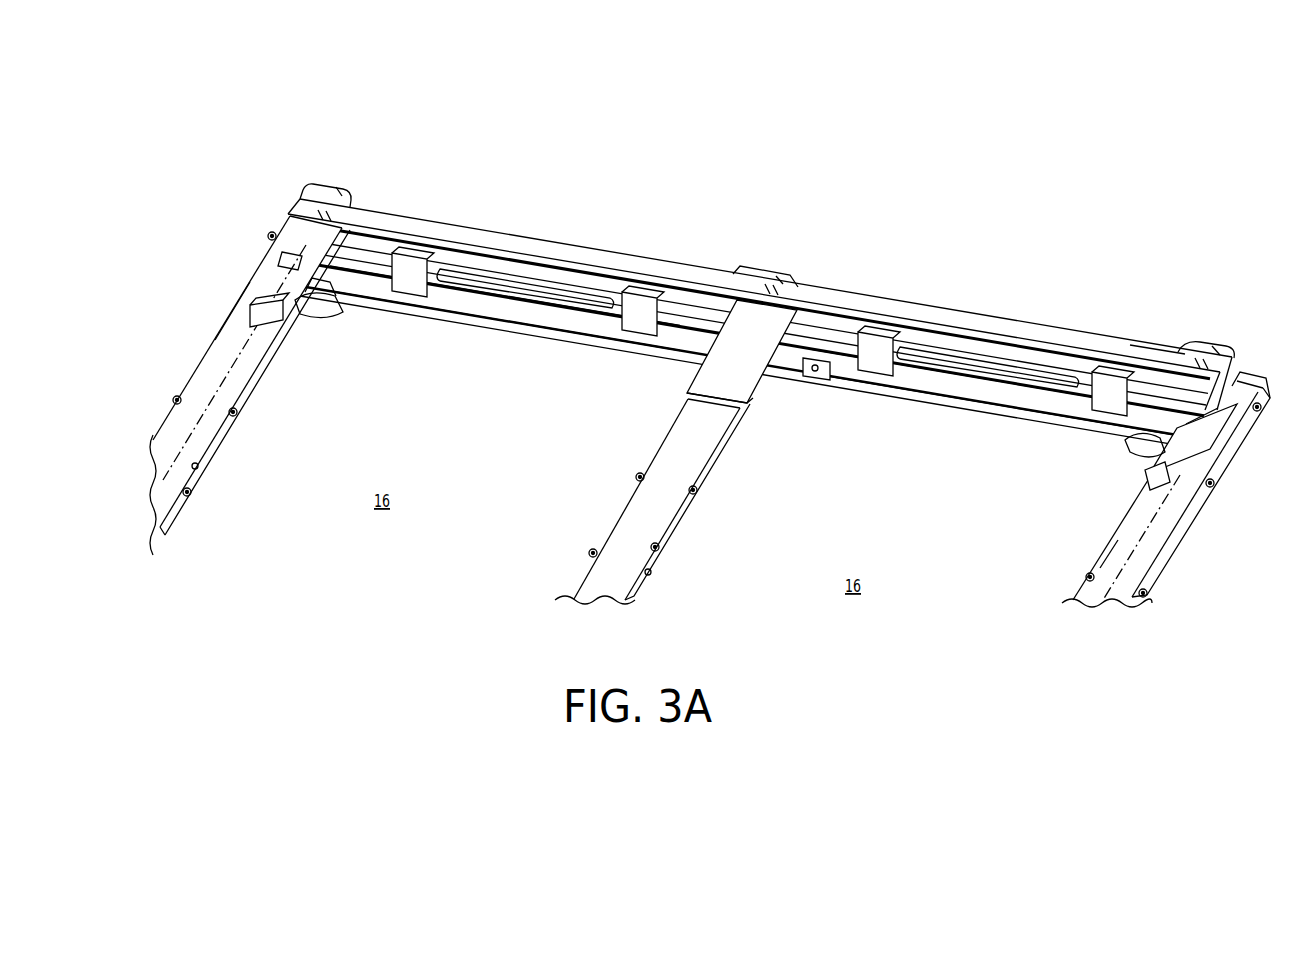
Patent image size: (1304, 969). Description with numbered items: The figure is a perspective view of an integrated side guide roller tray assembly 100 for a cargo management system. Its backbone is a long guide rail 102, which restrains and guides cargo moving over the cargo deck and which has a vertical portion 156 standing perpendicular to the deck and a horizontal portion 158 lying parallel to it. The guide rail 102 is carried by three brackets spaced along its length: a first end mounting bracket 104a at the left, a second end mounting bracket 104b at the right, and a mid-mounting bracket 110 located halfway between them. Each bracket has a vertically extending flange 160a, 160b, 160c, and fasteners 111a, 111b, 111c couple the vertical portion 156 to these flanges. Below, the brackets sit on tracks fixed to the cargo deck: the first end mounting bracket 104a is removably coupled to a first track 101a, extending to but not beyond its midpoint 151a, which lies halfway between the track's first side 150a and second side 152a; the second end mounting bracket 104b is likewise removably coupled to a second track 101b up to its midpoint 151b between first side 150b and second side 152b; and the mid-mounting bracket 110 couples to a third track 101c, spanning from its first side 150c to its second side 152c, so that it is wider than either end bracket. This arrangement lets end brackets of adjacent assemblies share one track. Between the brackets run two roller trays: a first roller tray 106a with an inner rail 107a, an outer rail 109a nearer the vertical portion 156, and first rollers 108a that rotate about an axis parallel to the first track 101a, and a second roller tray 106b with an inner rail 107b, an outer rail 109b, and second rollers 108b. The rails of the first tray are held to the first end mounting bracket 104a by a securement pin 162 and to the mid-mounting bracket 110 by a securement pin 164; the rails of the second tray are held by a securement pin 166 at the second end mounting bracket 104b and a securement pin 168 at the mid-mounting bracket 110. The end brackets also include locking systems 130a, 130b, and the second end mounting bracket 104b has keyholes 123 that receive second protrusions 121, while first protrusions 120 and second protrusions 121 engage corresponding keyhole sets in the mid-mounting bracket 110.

The integrated side guide roller tray assembly 100 is at (228, 110).
The guide rail 102 is at (505, 225).
The first track 101a is at (148, 470).
The second track 101b is at (1118, 592).
The third track 101c is at (606, 598).
The first end mounting bracket 104a is at (282, 326).
The second end mounting bracket 104b is at (1197, 450).
The first roller tray 106a is at (486, 325).
The second roller tray 106b is at (880, 420).
The inner rail 107a is at (548, 328).
The inner rail 107b is at (956, 398).
The first rollers 108a is at (412, 258).
The second rollers 108b is at (878, 338).
The outer rail 109a is at (575, 285).
The outer rail 109b is at (1003, 357).
The mid-mounting bracket 110 is at (686, 393).
The fastener 111a is at (344, 188).
The fastener 111b is at (1218, 347).
The fastener 111c is at (782, 277).
The first protrusions 120 is at (191, 494).
The second protrusions 121 is at (172, 401).
The keyholes 123 is at (1138, 468).
The locking system 130a is at (347, 330).
The locking system 130b is at (1112, 449).
The first side 150a is at (246, 390).
The first side 150b is at (1162, 563).
The first side 150c is at (678, 520).
The midpoint 151a is at (210, 322).
The midpoint 151b is at (1190, 545).
The second side 152a is at (183, 380).
The second side 152b is at (1100, 560).
The second side 152c is at (612, 515).
The vertical portion 156 is at (1239, 378).
The horizontal portion 158 is at (1156, 352).
The vertically extending flange 160a is at (306, 186).
The vertically extending flange 160b is at (1230, 354).
The vertically extending flange 160c is at (740, 268).
The securement pin 162 is at (286, 260).
The securement pin 164 is at (723, 331).
The securement pin 166 is at (1192, 434).
The securement pin 168 is at (808, 372).